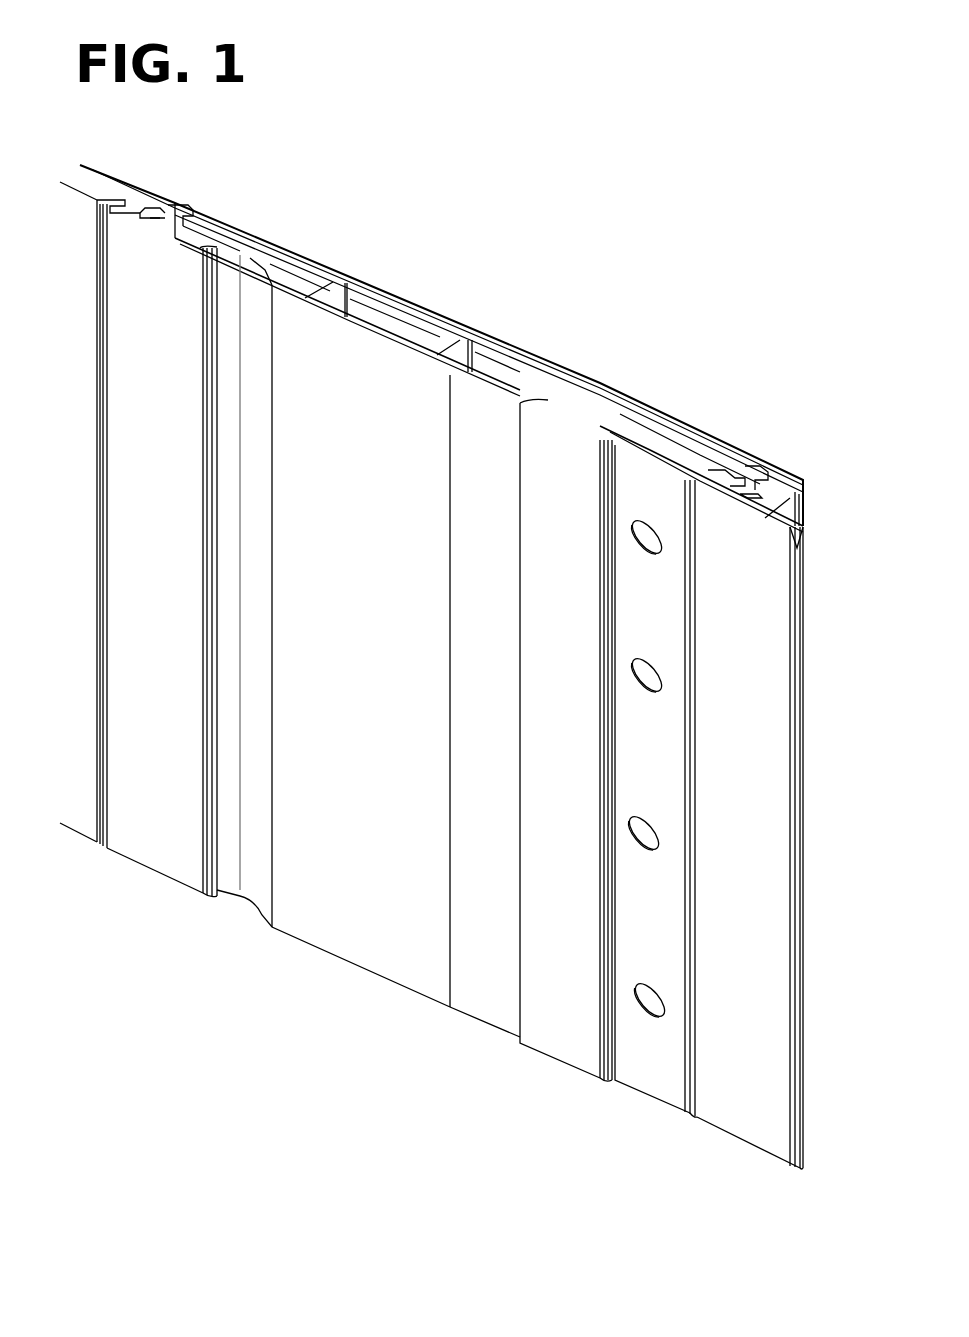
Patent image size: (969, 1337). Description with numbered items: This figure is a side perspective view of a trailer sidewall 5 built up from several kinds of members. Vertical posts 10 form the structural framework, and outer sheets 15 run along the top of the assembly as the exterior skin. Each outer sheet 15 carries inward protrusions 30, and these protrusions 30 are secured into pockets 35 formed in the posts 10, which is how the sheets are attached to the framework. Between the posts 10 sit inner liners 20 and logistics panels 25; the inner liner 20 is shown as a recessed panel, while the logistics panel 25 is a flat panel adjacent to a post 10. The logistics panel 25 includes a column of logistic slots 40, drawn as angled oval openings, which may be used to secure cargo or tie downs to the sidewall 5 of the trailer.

The sidewall 5 is at (524, 272).
The post 10 is at (137, 843).
The outer sheet 15 is at (120, 170).
The inner liner 20 is at (347, 945).
The logistics panel 25 is at (635, 1083).
The inward protrusion 30 is at (182, 208).
The pocket 35 is at (746, 497).
The logistic slot 40 is at (652, 555).